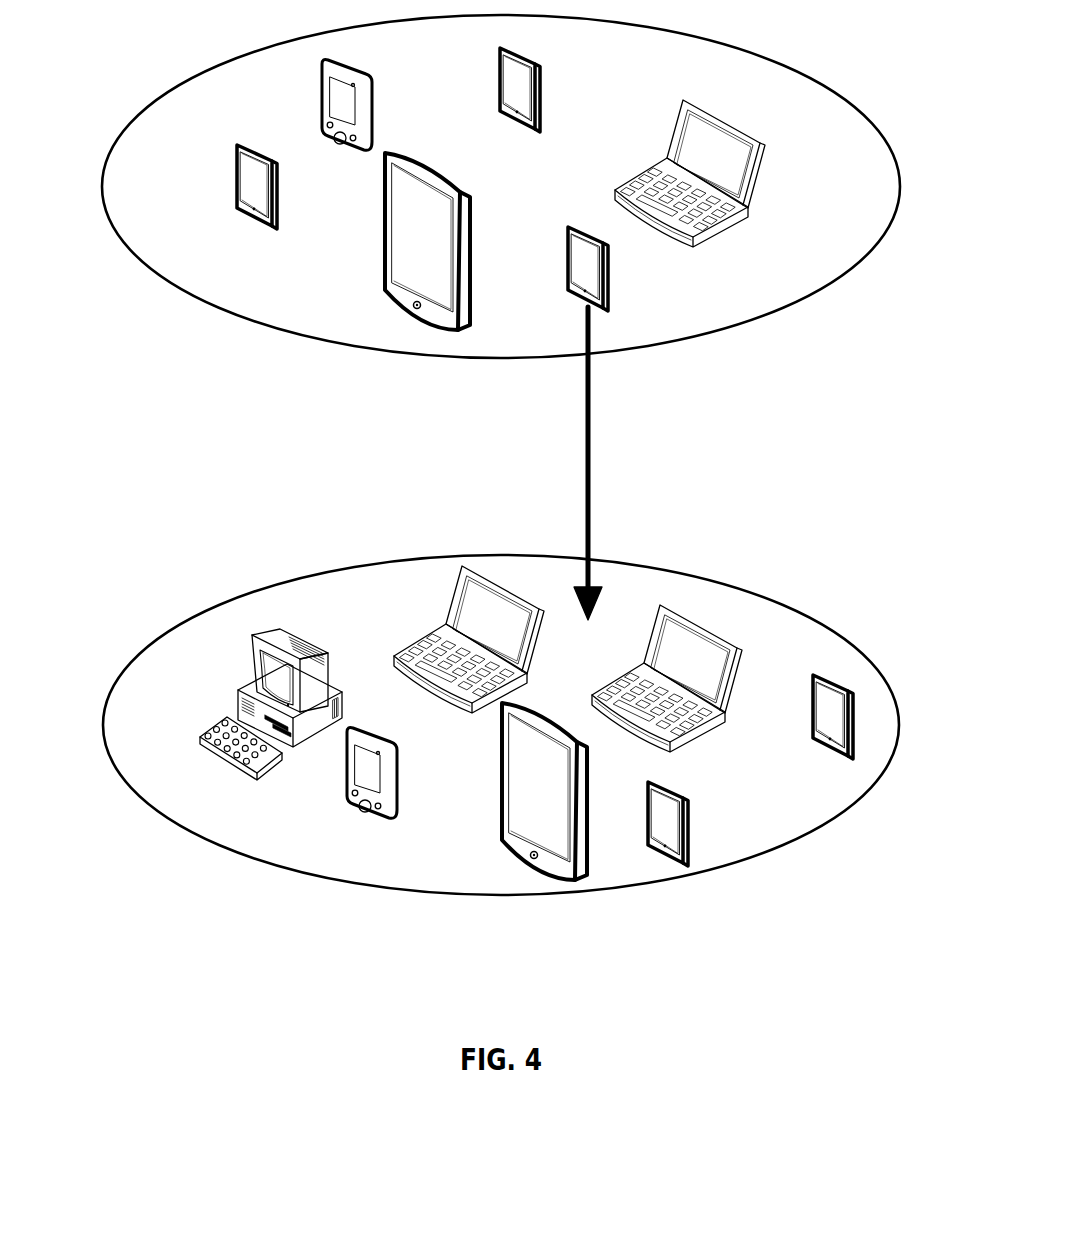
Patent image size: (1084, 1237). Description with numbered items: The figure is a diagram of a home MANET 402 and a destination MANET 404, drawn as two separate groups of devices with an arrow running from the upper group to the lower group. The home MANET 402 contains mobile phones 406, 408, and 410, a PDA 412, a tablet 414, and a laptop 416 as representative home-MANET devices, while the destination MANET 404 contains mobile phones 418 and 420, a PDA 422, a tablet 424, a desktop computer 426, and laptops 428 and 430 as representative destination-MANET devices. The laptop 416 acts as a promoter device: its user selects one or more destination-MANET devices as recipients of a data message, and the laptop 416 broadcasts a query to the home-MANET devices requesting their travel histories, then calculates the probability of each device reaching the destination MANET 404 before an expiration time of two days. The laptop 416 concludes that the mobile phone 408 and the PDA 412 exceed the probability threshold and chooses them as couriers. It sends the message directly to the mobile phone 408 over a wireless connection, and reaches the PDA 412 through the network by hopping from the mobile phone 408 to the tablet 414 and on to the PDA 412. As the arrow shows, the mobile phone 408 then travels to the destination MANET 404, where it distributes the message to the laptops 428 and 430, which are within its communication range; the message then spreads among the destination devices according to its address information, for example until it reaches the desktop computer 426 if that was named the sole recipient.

The home MANET 402 is at (273, 50).
The destination MANET 404 is at (290, 593).
The mobile phone 406 is at (538, 82).
The mobile phone 408 is at (590, 265).
The mobile phone 410 is at (250, 190).
The PDA 412 is at (364, 112).
The tablet 414 is at (392, 225).
The laptop 416 is at (750, 185).
The mobile phone 418 is at (838, 723).
The mobile phone 420 is at (668, 825).
The PDA 422 is at (373, 810).
The tablet 424 is at (512, 812).
The desktop computer 426 is at (222, 746).
The laptop 428 is at (472, 630).
The laptop 430 is at (715, 655).